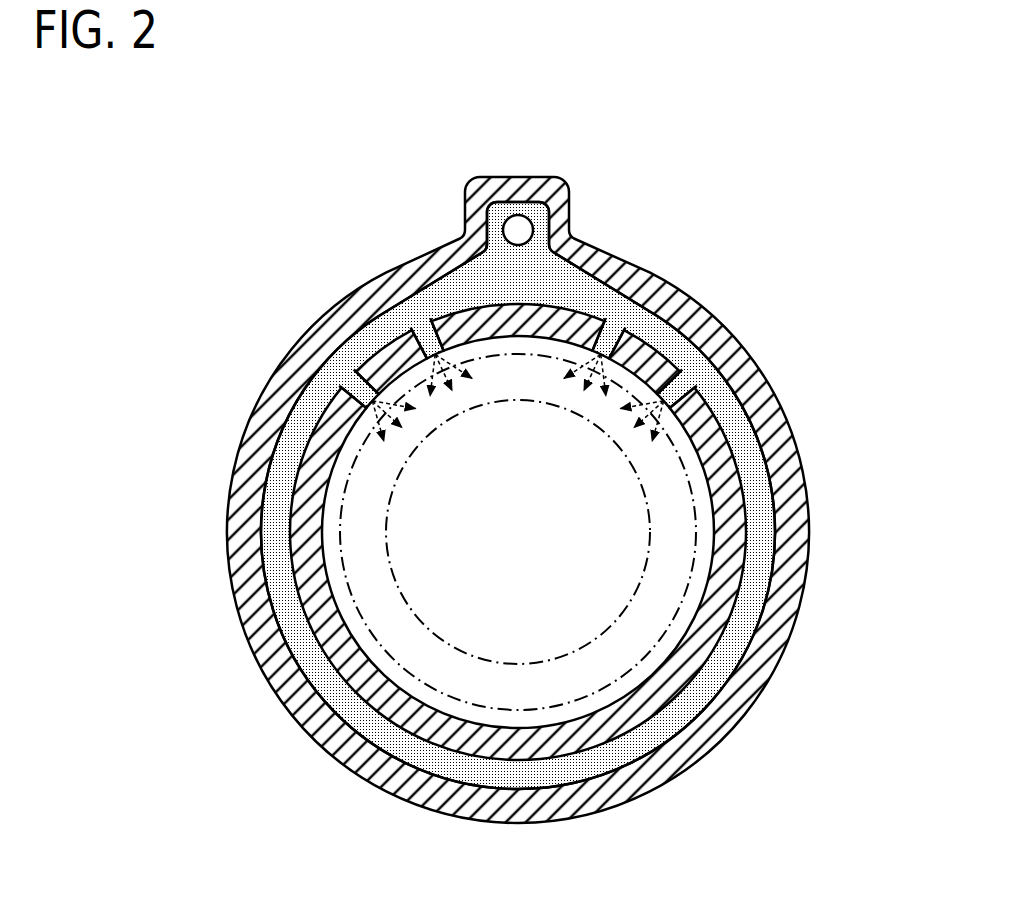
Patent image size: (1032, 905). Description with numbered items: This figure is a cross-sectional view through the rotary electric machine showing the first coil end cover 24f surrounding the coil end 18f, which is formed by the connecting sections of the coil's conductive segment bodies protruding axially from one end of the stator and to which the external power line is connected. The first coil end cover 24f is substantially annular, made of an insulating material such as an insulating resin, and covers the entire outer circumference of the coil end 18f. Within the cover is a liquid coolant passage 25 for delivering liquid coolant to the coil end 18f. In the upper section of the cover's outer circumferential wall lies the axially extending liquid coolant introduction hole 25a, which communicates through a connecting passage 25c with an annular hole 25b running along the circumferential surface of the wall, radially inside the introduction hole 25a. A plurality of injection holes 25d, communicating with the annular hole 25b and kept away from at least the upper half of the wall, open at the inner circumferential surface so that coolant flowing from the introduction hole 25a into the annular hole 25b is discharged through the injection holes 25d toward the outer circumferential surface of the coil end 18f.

The liquid coolant passage 25 is at (648, 309).
The liquid coolant introduction hole 25a is at (519, 214).
The annular hole 25b is at (708, 387).
The connecting passage 25c is at (484, 256).
The injection holes 25d is at (427, 342).
The first coil end cover 24f is at (718, 281).
The coil end 18f is at (700, 452).